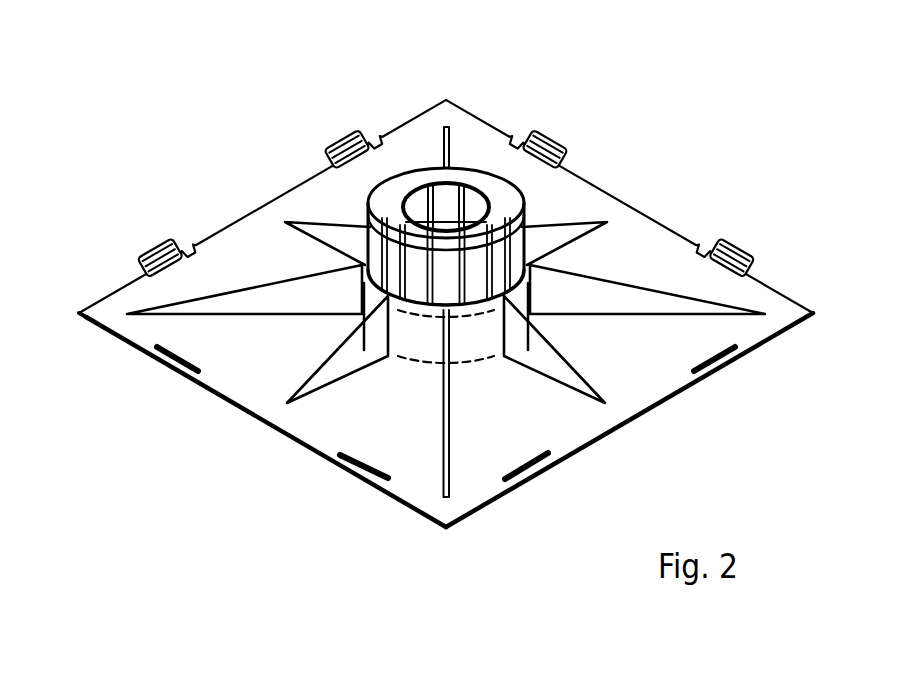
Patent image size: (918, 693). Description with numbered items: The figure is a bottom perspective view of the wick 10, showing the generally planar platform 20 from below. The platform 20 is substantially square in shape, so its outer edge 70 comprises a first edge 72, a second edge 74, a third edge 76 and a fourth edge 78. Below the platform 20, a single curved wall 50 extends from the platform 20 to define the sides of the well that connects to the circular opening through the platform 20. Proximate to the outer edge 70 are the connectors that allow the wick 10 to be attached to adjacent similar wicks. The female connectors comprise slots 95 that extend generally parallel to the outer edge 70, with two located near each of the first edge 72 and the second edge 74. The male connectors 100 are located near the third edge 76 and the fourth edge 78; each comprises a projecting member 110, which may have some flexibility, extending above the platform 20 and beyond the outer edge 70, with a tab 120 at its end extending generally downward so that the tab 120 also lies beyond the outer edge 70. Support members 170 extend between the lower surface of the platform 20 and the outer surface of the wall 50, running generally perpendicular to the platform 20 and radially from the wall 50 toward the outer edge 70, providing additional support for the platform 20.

The wick 10 is at (424, 333).
The platform 20 is at (424, 357).
The wall 50 is at (523, 208).
The outer edge 70 is at (97, 342).
The first edge 72 is at (648, 418).
The second edge 74 is at (295, 445).
The third edge 76 is at (256, 205).
The fourth edge 78 is at (648, 213).
The slots 95 is at (367, 480).
The male connector 100 is at (727, 226).
The projecting member 110 is at (365, 140).
The tab 120 is at (157, 245).
The support members 170 is at (556, 365).